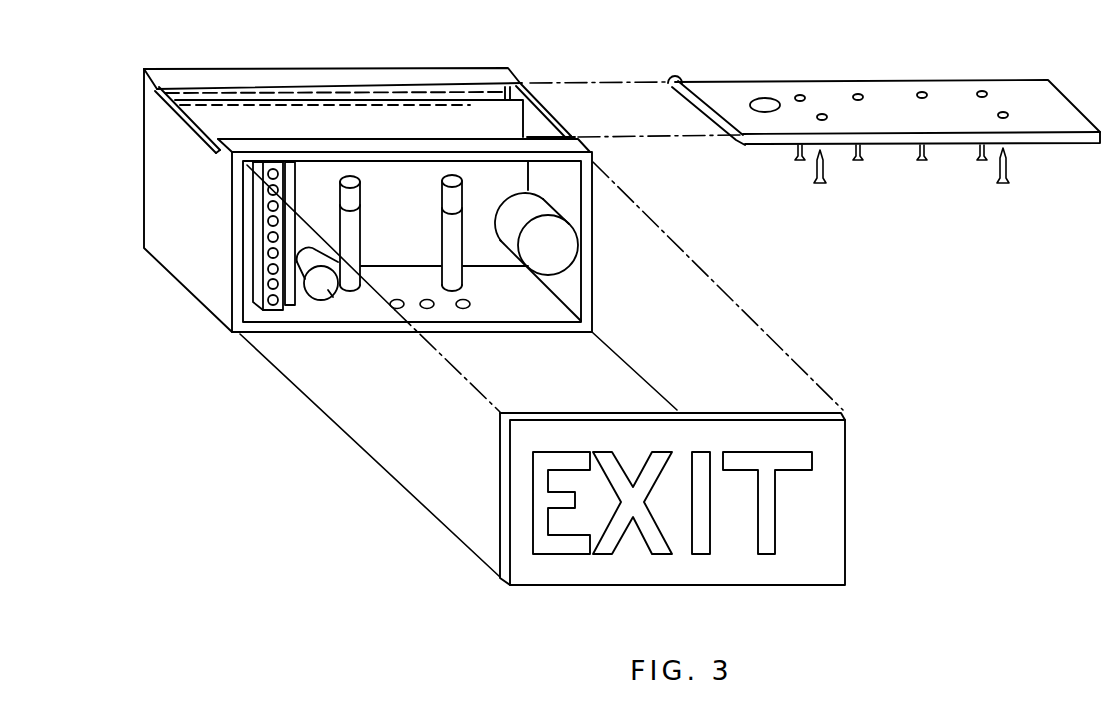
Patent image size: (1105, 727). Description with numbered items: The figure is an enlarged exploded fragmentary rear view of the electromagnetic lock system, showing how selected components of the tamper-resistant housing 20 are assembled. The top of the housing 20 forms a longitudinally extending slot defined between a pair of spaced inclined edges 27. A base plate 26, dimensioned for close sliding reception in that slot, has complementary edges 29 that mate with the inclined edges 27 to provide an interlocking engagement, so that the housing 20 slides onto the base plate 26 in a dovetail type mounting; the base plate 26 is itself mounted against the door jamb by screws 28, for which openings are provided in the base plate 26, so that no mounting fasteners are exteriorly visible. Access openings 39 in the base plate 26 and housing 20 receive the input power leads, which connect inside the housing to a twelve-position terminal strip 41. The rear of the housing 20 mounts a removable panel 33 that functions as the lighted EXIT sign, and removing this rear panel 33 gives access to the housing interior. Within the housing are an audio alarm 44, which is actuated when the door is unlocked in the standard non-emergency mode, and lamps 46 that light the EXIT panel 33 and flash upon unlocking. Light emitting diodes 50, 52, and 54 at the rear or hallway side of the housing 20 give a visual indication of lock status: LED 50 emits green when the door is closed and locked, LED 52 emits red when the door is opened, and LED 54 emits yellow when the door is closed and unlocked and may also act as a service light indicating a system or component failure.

The housing 20 is at (160, 198).
The base plate 26 is at (727, 90).
The inclined edges 27 is at (155, 93).
The screws 28 is at (827, 172).
The complementary edges 29 is at (668, 84).
The removable panel 33 is at (836, 477).
The access openings 39 is at (768, 102).
The terminal strip 41 is at (262, 253).
The audio alarm 44 is at (560, 259).
The lamps 46 is at (353, 228).
The light emitting diode 50 is at (397, 309).
The light emitting diode 52 is at (428, 309).
The light emitting diode 54 is at (466, 309).